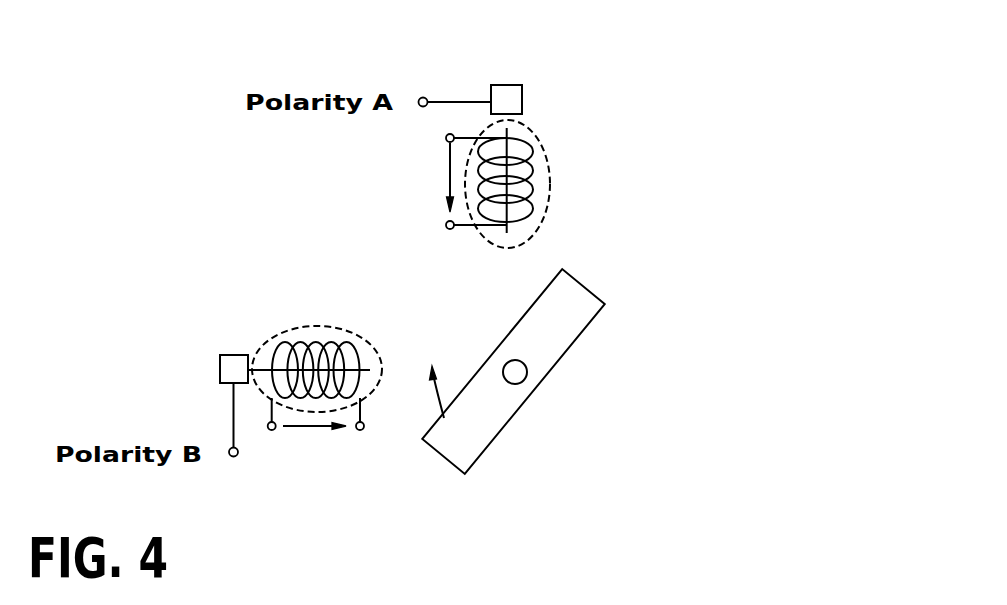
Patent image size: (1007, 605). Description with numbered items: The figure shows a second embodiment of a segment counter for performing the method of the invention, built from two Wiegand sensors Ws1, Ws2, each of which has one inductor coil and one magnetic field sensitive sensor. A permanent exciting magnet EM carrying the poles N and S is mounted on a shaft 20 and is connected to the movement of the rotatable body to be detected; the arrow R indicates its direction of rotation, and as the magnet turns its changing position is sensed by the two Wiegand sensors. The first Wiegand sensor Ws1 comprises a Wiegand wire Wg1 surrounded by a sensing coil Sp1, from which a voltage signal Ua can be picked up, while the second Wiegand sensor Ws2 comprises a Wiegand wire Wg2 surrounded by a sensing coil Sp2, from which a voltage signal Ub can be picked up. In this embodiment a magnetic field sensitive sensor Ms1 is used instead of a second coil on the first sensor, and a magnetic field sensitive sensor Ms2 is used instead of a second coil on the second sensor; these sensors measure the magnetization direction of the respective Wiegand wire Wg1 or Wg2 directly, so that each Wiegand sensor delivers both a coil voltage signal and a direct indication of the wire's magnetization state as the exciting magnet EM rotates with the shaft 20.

The magnetic field sensitive sensor Ms1 is at (507, 102).
The sensing coil Sp1 is at (533, 152).
The Wiegand sensor Ws1 is at (547, 202).
The Wiegand wire Wg1 is at (507, 232).
The voltage signal Ua is at (427, 177).
The magnetic field sensitive sensor Ms2 is at (232, 368).
The sensing coil Sp2 is at (330, 345).
The Wiegand sensor Ws2 is at (373, 350).
The Wiegand wire Wg2 is at (265, 370).
The voltage signal Ub is at (314, 439).
The exciting magnet EM is at (553, 330).
The shaft 20 is at (515, 372).
The arrow indicating direction of rotation R is at (432, 377).